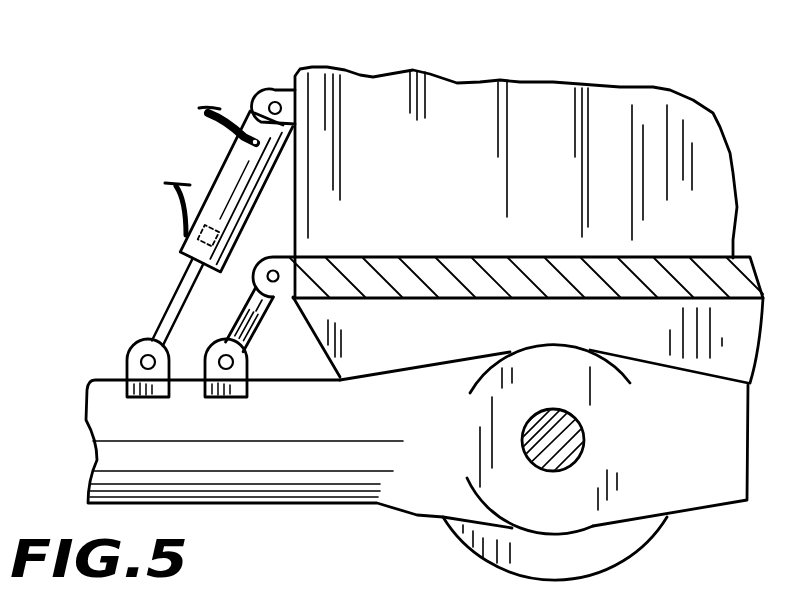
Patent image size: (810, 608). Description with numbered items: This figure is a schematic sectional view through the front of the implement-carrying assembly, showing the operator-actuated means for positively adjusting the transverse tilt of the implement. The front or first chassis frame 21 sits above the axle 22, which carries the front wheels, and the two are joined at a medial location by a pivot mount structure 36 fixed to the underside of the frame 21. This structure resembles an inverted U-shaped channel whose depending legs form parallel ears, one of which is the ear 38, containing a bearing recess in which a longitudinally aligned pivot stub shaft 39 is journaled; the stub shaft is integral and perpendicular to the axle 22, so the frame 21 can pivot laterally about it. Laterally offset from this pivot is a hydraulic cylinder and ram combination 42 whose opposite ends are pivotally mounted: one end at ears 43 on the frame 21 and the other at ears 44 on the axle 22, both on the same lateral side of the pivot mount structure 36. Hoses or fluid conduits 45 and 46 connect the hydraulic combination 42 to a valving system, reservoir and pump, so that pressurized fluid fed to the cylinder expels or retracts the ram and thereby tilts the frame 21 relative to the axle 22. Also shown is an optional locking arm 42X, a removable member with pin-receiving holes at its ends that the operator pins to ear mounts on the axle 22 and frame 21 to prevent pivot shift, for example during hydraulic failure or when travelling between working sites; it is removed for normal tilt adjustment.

The front or first chassis frame 21 is at (433, 165).
The axle 22 is at (318, 477).
The pivot mount structure 36 is at (521, 275).
The ear 38 is at (612, 549).
The pivot stub shaft 39 is at (563, 441).
The hydraulic cylinder and ram combination 42 is at (225, 182).
The locking arm 42X is at (257, 320).
The ears on the frame 43 is at (263, 93).
The ears on the axle 44 is at (137, 350).
The hose or fluid conduit 45 is at (212, 131).
The hose or fluid conduit 46 is at (180, 214).